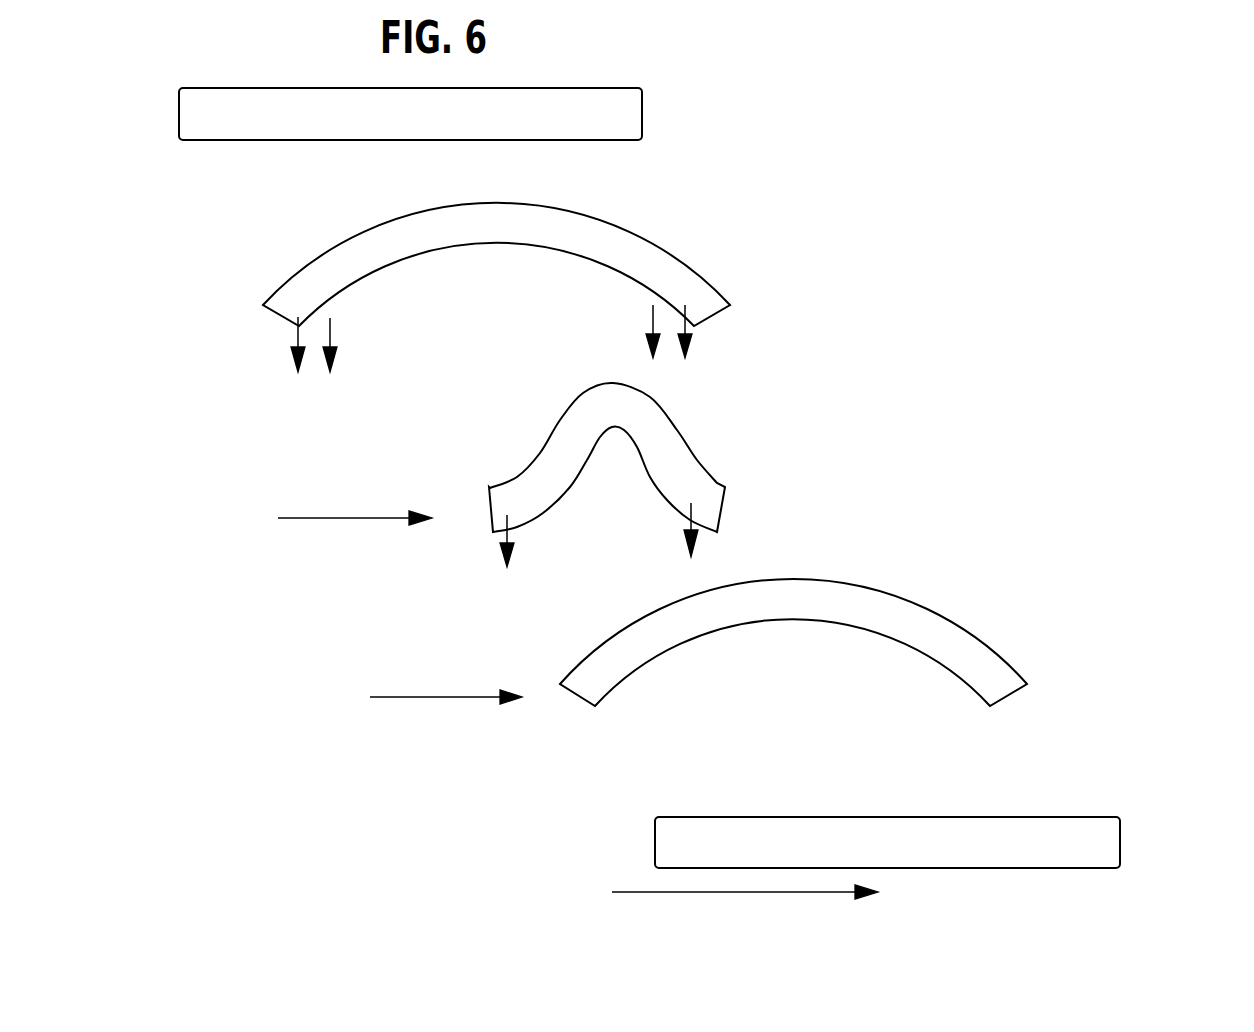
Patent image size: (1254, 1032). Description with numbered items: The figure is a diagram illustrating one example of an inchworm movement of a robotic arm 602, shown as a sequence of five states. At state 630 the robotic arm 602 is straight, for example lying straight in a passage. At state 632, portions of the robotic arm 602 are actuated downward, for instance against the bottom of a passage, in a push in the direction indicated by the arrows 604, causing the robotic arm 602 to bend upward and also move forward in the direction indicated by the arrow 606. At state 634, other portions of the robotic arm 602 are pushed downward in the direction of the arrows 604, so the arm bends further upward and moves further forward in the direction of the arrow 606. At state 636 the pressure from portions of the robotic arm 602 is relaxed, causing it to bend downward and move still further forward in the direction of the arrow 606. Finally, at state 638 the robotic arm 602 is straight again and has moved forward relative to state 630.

The robotic arm 602 is at (618, 118).
The arrows indicating downward push 604 is at (332, 322).
The arrow indicating forward movement 606 is at (686, 893).
The state 630 is at (497, 114).
The state 632 is at (575, 265).
The state 634 is at (280, 497).
The state 636 is at (825, 643).
The state 638 is at (368, 674).